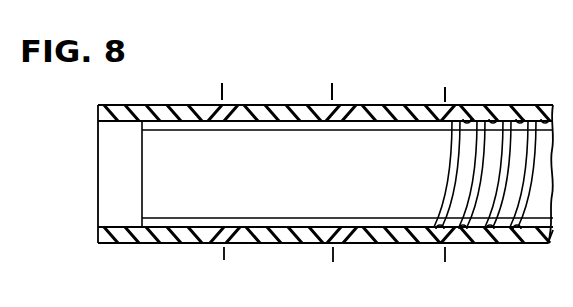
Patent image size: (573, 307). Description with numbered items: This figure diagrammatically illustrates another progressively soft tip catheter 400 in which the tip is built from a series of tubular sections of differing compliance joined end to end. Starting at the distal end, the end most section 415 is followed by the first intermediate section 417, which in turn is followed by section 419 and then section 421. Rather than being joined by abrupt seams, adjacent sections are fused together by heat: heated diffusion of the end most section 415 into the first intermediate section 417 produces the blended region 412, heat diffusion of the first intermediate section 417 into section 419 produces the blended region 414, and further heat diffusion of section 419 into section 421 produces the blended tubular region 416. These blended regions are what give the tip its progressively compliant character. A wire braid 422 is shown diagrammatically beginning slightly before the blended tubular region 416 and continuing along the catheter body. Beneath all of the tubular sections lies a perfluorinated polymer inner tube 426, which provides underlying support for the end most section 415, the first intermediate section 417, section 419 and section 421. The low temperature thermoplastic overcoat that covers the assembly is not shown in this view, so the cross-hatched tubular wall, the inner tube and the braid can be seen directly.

The progressively soft tip catheter 400 is at (163, 105).
The blended region 412 is at (234, 106).
The blended region 414 is at (344, 106).
The end most section 415 is at (186, 106).
The blended tubular region 416 is at (437, 106).
The first intermediate section 417 is at (273, 106).
The section 419 is at (389, 106).
The section 421 is at (488, 106).
The wire braid 422 is at (423, 242).
The perfluorinated polymer inner tube 426 is at (165, 243).